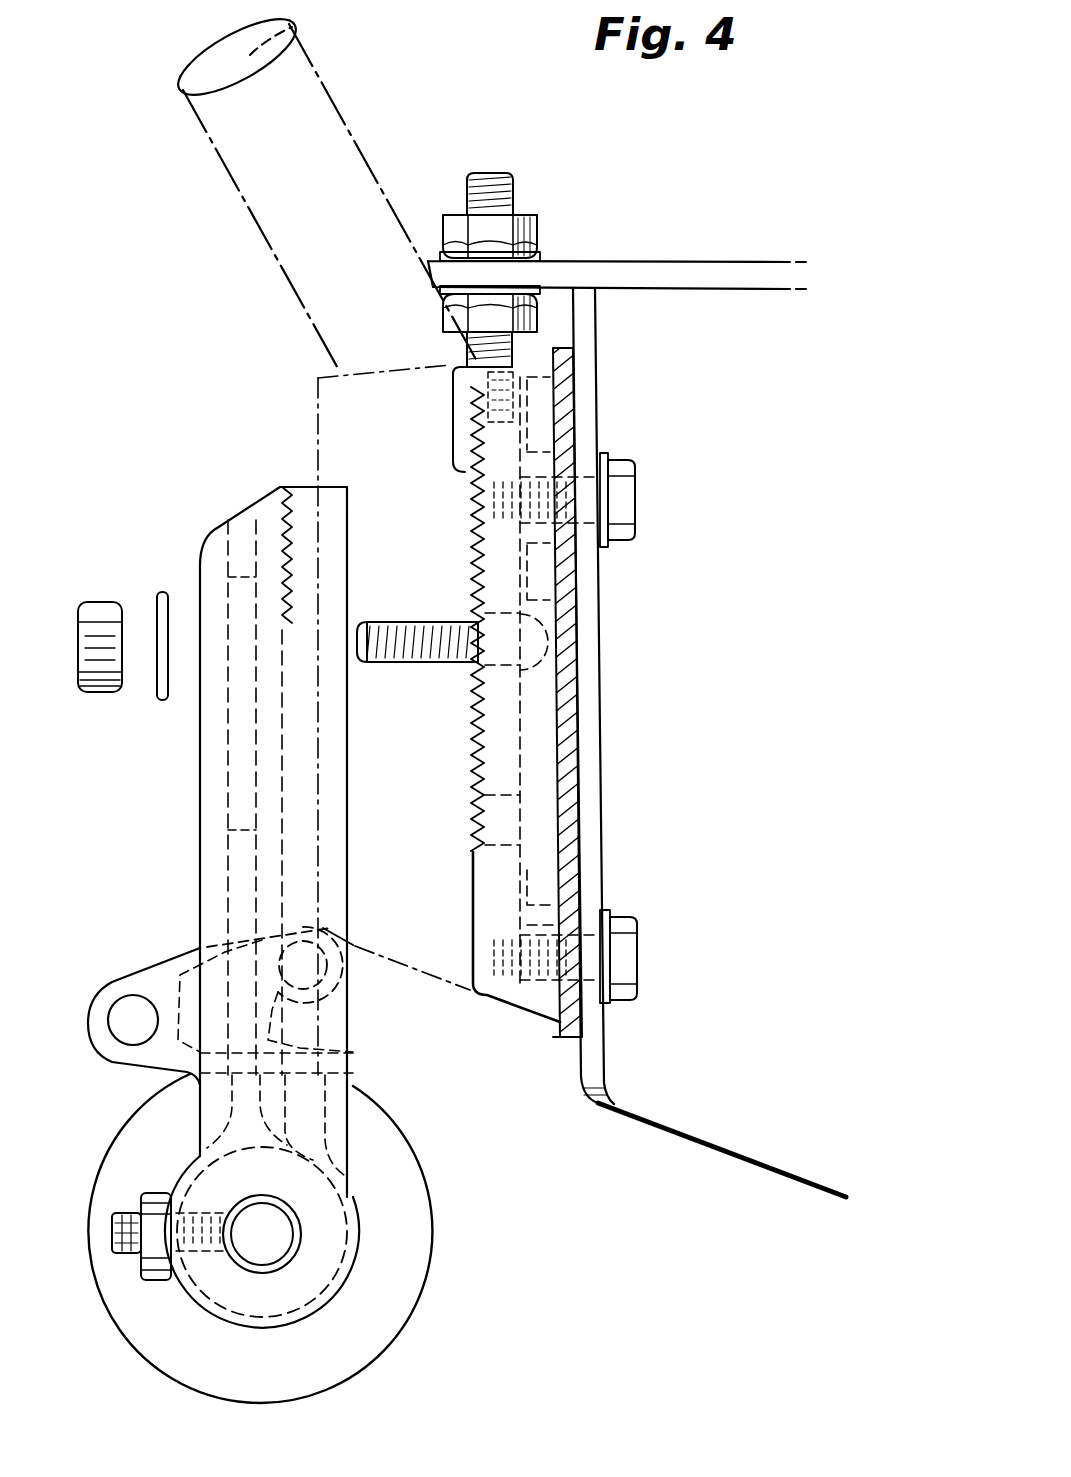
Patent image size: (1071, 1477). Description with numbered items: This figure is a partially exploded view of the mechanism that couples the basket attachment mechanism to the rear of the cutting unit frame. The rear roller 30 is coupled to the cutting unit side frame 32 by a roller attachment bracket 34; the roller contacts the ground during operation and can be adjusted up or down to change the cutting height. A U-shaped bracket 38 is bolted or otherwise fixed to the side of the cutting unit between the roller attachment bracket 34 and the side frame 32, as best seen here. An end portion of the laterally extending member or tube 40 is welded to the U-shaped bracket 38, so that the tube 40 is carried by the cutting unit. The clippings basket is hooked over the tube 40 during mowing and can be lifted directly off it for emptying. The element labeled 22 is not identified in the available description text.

The bolt and nut assembly 22 is at (657, 256).
The rear roller 30 is at (433, 1180).
The side frame 32 is at (722, 262).
The attachment bracket 34 is at (252, 497).
The U-shaped bracket 38 is at (410, 968).
The tube 40 is at (337, 103).